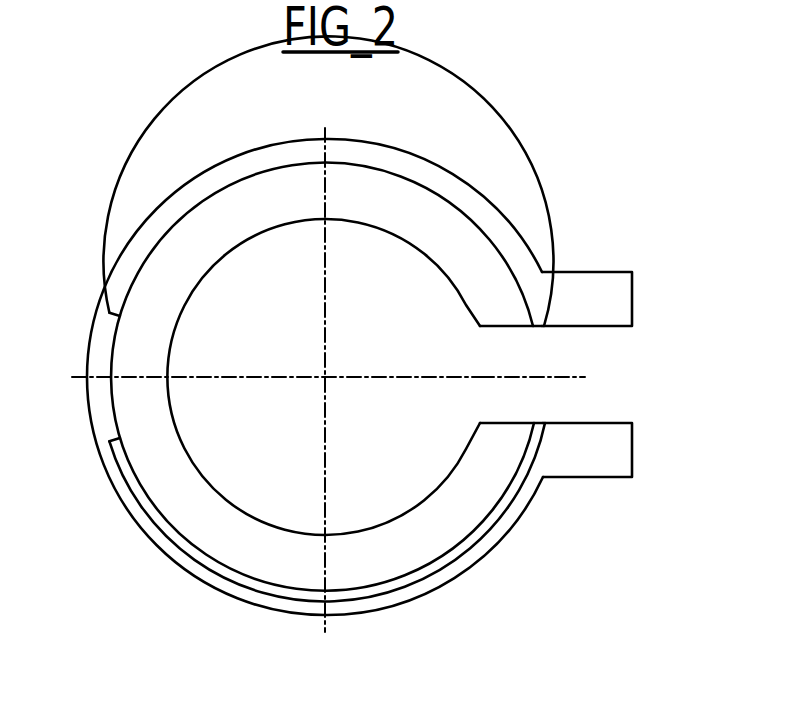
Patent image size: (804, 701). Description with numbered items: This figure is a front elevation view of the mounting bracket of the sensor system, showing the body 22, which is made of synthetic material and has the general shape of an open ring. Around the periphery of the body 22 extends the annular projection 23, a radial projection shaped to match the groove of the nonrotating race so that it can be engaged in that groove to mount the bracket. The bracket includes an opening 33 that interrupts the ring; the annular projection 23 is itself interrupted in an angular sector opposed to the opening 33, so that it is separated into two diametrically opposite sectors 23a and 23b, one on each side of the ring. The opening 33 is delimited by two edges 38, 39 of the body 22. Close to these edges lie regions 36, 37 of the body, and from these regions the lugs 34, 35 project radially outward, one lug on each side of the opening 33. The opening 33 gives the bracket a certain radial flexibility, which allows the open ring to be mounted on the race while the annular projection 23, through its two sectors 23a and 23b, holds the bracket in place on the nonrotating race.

The body 22 is at (467, 243).
The annular projection 23 is at (398, 163).
The sector 23a is at (438, 187).
The sector 23b is at (412, 577).
The opening 33 is at (530, 348).
The lug 34 is at (610, 298).
The lug 35 is at (610, 450).
The region 36 is at (497, 292).
The region 37 is at (502, 460).
The edge 38 is at (495, 327).
The edge 39 is at (502, 423).